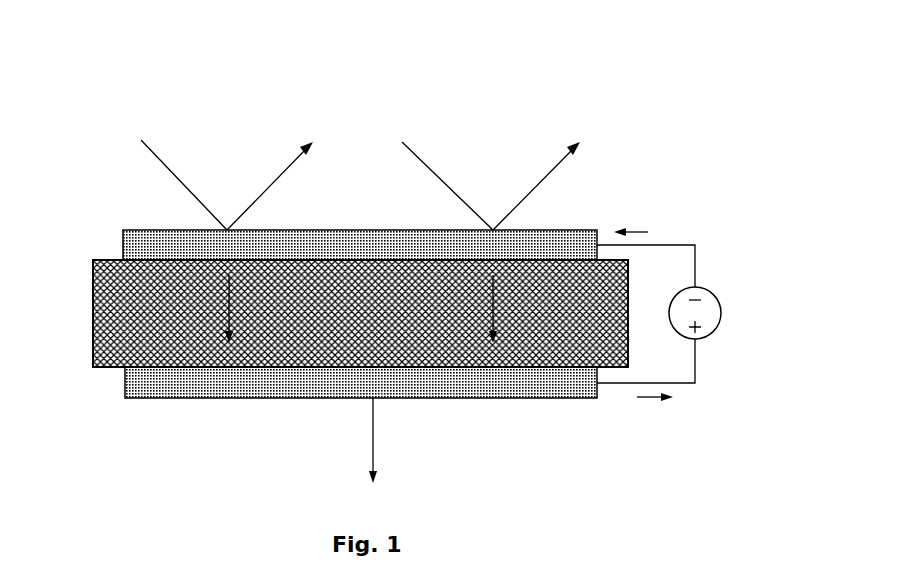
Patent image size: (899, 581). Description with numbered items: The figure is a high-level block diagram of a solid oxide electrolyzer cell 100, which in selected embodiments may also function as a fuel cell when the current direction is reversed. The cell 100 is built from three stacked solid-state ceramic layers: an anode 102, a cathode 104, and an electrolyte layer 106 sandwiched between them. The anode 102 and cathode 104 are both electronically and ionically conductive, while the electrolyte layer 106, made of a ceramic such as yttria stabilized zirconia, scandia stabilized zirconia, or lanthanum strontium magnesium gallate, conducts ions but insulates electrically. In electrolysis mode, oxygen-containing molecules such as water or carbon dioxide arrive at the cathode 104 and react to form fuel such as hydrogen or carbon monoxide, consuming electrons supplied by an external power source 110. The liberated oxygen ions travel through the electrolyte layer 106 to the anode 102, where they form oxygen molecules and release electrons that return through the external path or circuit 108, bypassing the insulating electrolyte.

The solid oxide electrolyzer cell 100 is at (138, 66).
The anode 102 is at (130, 383).
The cathode 104 is at (130, 246).
The electrolyte layer 106 is at (105, 320).
The external path 108 is at (719, 223).
The external power source 110 is at (716, 306).